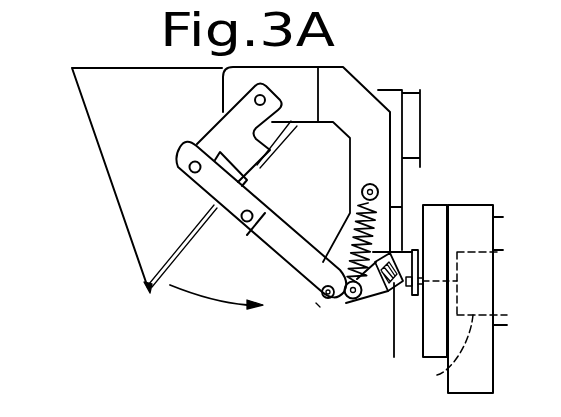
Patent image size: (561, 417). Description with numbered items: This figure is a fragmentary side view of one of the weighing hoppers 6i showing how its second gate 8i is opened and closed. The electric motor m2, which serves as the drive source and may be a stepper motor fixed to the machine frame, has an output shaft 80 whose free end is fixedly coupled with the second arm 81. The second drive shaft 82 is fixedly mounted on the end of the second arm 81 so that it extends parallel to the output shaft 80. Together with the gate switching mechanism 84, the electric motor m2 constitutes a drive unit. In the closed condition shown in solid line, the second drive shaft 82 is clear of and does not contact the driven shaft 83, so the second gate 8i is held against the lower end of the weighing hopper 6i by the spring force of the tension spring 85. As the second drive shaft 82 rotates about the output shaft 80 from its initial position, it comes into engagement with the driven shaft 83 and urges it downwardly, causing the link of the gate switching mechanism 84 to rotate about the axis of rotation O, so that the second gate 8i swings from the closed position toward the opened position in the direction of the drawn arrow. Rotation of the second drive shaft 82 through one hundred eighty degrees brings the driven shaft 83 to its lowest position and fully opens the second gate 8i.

The weighing hopper 6i is at (117, 165).
The second gate 8i is at (230, 278).
The tension spring 85 is at (352, 214).
The second drive shaft 82 is at (393, 262).
The second arm 81 is at (428, 250).
The output shaft 80 is at (421, 300).
The driven shaft 83 is at (377, 300).
The gate switching mechanism 84 is at (330, 308).
The axis of rotation O is at (318, 305).
The electric motor m2 is at (449, 328).